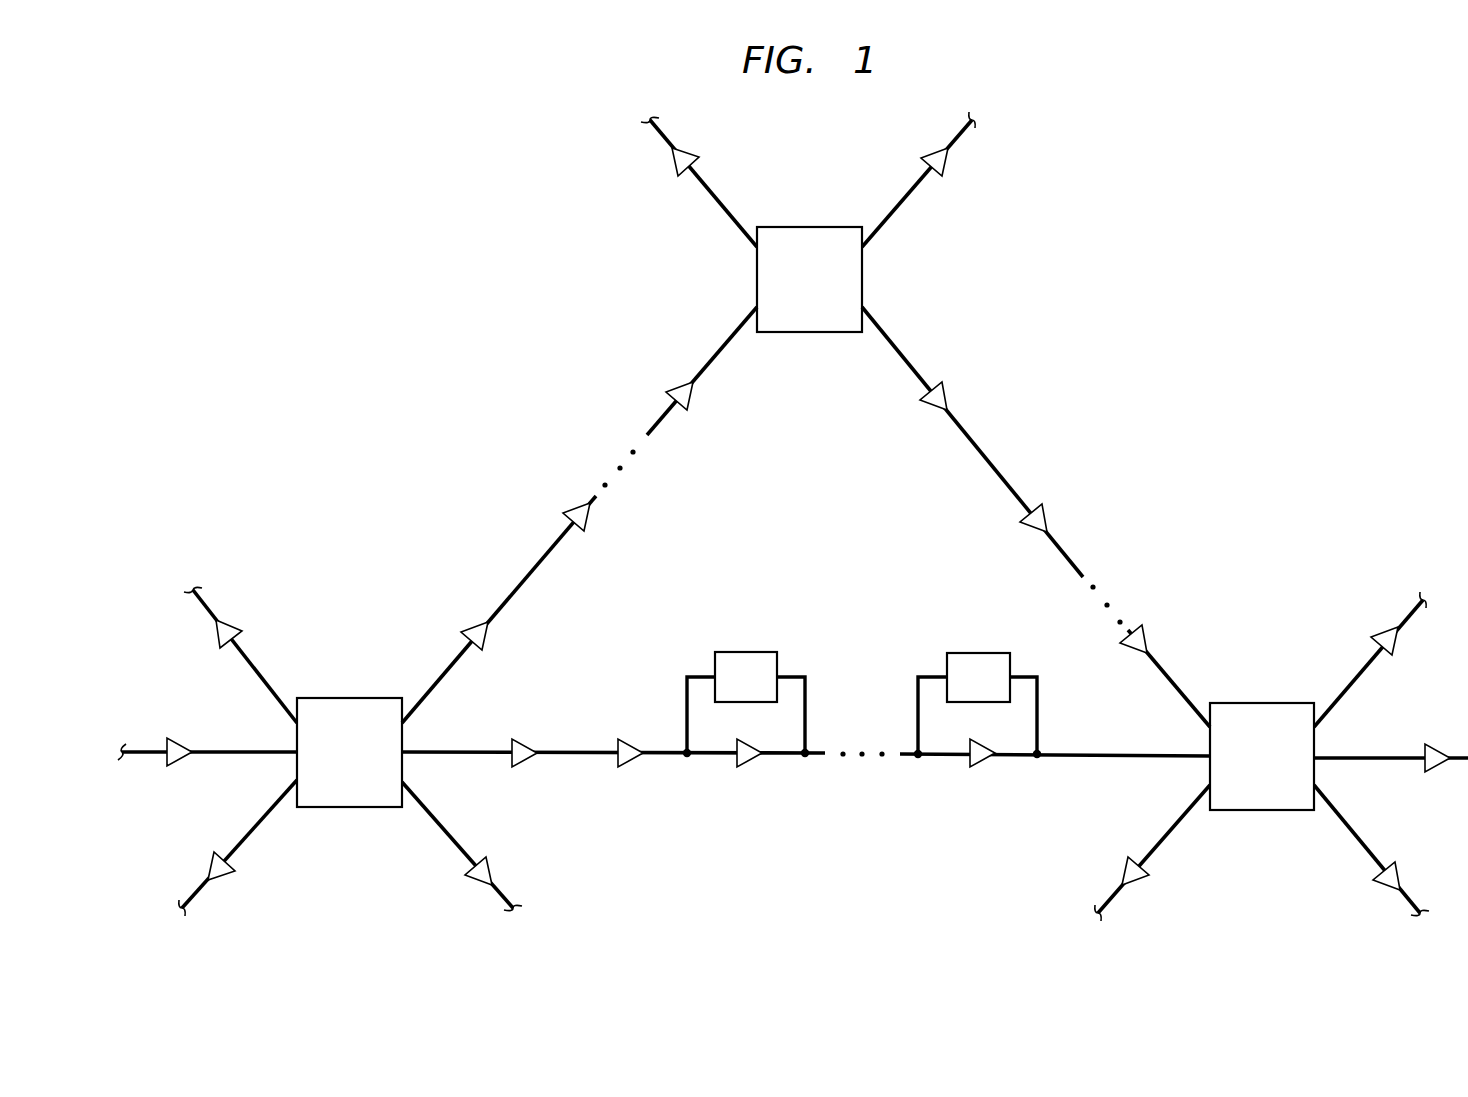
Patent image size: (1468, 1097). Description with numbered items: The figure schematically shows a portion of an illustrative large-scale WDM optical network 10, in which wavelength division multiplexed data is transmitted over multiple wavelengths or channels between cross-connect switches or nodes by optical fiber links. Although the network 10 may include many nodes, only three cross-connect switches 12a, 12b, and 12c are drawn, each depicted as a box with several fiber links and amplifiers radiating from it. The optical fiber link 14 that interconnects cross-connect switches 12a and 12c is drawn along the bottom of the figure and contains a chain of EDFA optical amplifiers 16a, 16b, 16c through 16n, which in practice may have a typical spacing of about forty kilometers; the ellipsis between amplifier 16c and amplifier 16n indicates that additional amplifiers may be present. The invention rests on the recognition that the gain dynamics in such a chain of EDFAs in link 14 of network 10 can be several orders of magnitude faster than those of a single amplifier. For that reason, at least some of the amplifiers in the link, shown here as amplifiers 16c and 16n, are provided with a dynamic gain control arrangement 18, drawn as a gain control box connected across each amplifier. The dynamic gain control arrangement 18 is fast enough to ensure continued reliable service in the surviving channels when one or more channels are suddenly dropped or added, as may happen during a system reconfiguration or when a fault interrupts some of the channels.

The WDM optical network 10 is at (1156, 414).
The cross-connect switch 12a is at (350, 697).
The cross-connect switch 12b is at (862, 280).
The cross-connect switch 12c is at (1262, 703).
The optical fiber link 14 is at (480, 752).
The EDFA optical amplifier 16a is at (528, 760).
The EDFA optical amplifier 16b is at (633, 760).
The EDFA optical amplifier 16c is at (752, 760).
The EDFA optical amplifier 16n is at (985, 760).
The dynamic gain control arrangement 18 is at (747, 652).